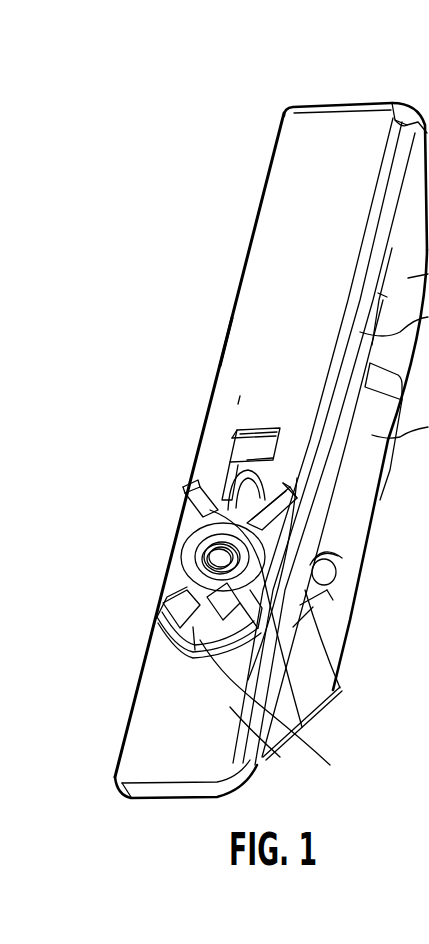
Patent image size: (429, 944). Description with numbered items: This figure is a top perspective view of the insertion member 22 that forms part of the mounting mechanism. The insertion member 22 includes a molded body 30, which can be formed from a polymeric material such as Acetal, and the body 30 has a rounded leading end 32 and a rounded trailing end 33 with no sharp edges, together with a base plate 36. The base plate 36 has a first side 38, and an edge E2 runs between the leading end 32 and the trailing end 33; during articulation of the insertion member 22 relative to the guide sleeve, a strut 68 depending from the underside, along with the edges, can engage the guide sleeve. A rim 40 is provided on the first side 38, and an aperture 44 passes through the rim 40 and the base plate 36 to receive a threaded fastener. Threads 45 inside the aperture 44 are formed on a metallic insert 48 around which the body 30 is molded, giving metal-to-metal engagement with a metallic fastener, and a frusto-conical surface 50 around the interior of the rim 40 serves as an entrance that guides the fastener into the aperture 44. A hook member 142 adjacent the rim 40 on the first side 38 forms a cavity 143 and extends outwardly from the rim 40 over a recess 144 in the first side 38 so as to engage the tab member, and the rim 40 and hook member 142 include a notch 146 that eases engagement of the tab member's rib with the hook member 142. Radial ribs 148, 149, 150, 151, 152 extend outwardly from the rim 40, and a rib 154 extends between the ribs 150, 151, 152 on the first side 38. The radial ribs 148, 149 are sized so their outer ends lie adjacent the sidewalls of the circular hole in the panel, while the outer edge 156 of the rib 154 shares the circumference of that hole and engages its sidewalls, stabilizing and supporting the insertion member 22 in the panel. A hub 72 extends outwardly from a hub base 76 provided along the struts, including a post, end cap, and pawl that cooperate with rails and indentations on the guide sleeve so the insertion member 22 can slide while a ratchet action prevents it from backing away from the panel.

The insertion member 22 is at (203, 217).
The body 30 is at (231, 318).
The edge E2 is at (218, 353).
The leading end 32 is at (342, 106).
The first side 38 is at (336, 166).
The trailing end 33 is at (170, 799).
The base plate 36 is at (240, 397).
The strut 68 is at (305, 478).
The cavity 143 is at (322, 548).
The recess 144 is at (264, 432).
The hook member 142 is at (235, 445).
The notch 146 is at (222, 470).
The radial rib 148 is at (196, 492).
The rim 40 is at (170, 548).
The metallic insert 48 is at (185, 545).
The aperture 44 is at (205, 565).
The outer edge 156 is at (182, 672).
The radial rib 151 is at (176, 620).
The radial rib 150 is at (185, 588).
The hub base 76 is at (330, 552).
The radial rib 149 is at (316, 568).
The hub 72 is at (340, 582).
The threads 45 is at (338, 690).
The radial rib 152 is at (305, 702).
The frusto-conical surface 50 is at (283, 717).
The rib 154 is at (273, 750).